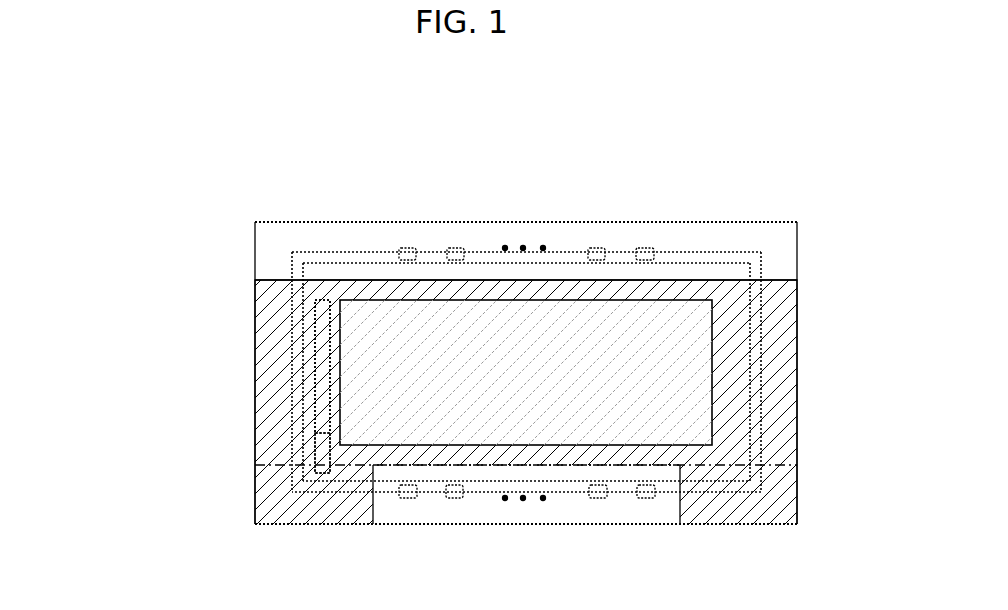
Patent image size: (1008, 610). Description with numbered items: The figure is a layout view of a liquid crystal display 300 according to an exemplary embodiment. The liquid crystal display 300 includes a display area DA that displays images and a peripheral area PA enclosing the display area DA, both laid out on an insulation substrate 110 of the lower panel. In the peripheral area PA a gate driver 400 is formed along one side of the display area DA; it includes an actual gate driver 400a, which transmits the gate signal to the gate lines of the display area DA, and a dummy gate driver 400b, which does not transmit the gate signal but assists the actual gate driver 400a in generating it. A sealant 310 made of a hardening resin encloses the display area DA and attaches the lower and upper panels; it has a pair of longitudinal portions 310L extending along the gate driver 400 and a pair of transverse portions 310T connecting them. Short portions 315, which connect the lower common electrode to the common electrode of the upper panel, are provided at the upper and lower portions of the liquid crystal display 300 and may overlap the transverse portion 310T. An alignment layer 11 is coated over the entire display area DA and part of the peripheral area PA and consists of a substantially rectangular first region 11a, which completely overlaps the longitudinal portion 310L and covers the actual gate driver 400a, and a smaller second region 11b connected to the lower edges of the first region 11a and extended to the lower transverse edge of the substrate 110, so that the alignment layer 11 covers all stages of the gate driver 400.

The liquid crystal display 300 is at (504, 102).
The insulation substrate 110 is at (628, 222).
The peripheral area PA is at (308, 318).
The display area DA is at (490, 300).
The alignment layer 11 is at (184, 422).
The first region 11a is at (255, 437).
The second region 11b is at (255, 510).
The sealant 310 is at (292, 145).
The longitudinal portion 310L is at (292, 299).
The transverse portion 310T is at (347, 252).
The short portion 315 is at (408, 500).
The gate driver 400 is at (150, 323).
The actual gate driver 400a is at (322, 335).
The dummy gate driver 400b is at (322, 445).